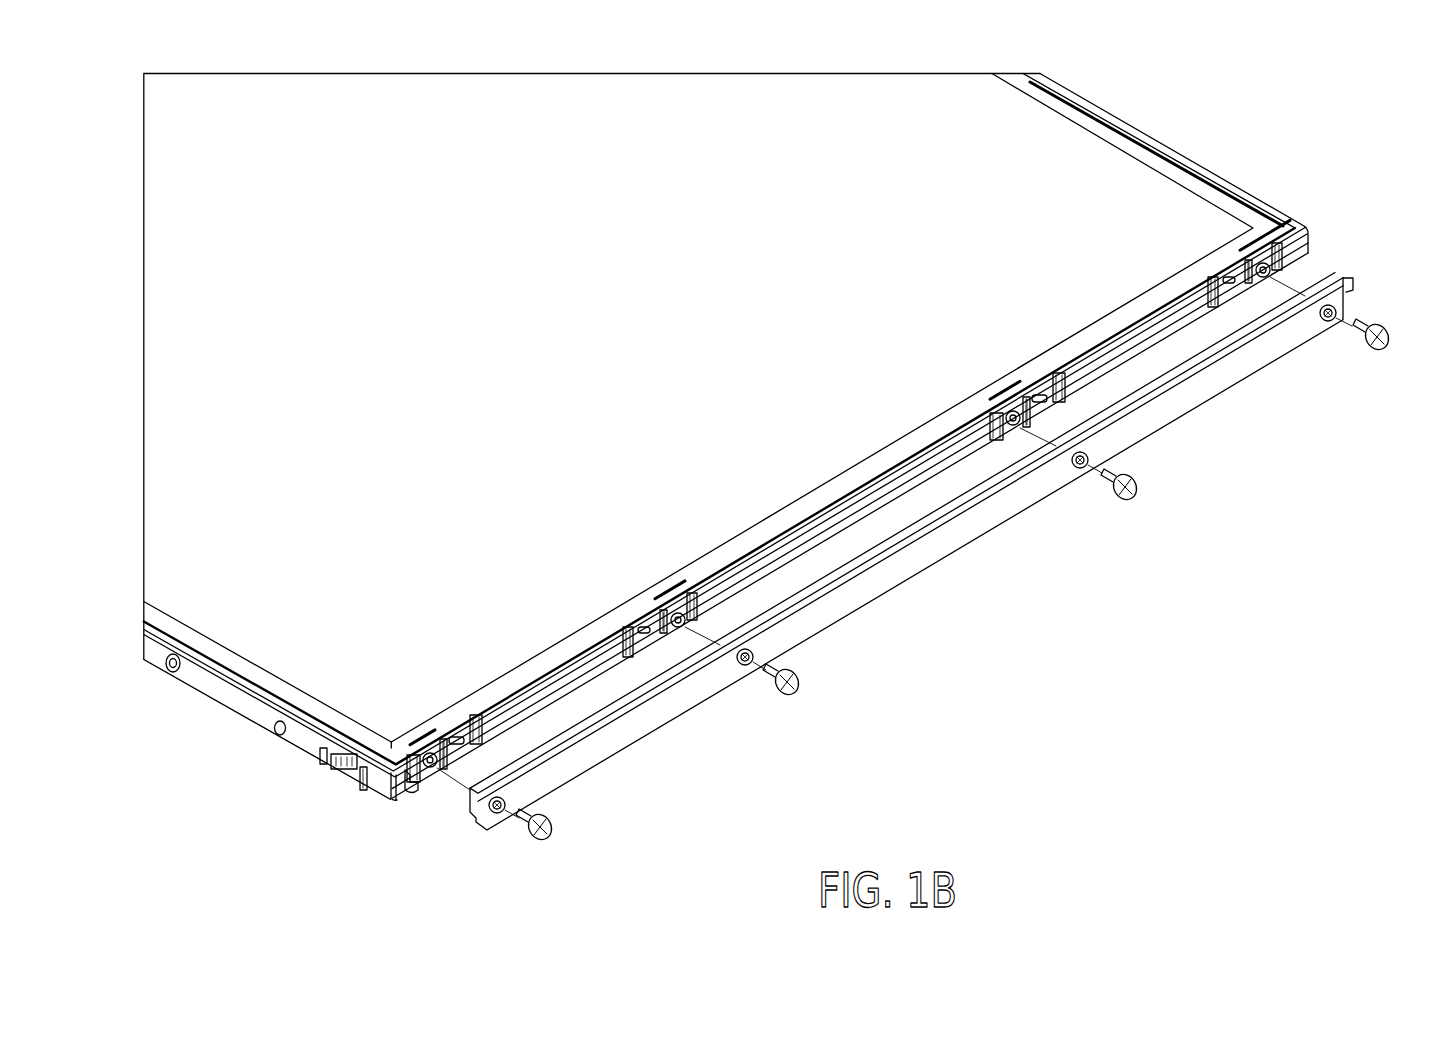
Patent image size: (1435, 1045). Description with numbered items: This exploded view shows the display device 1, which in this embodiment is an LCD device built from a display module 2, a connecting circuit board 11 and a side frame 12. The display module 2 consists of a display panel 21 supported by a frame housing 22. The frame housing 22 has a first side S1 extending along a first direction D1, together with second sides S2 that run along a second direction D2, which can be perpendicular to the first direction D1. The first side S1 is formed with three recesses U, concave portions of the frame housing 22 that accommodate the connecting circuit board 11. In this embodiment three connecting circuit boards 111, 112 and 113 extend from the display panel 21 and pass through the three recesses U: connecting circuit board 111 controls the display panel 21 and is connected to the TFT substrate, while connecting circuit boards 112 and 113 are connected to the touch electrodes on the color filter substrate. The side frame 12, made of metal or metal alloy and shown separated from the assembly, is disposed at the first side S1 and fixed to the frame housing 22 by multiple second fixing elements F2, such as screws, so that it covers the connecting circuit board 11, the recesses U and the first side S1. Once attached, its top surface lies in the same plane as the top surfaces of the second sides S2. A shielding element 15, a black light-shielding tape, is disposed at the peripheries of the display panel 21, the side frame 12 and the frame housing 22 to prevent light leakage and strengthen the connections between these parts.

The display device 1 is at (1264, 153).
The display module 2 is at (698, 408).
The display panel 21 is at (1068, 165).
The frame housing 22 is at (764, 419).
The second side S2 is at (1250, 205).
The connecting circuit board 11 is at (726, 437).
The connecting circuit board 111 is at (930, 458).
The connecting circuit board 112 is at (560, 652).
The connecting circuit board 113 is at (1142, 322).
The first side S1 is at (1040, 398).
The shielding element 15 is at (1175, 175).
The recess U is at (985, 410).
The side frame 12 is at (1185, 410).
The second fixing element F2 is at (1135, 493).
The first direction D1 is at (1050, 753).
The second direction D2 is at (1050, 753).